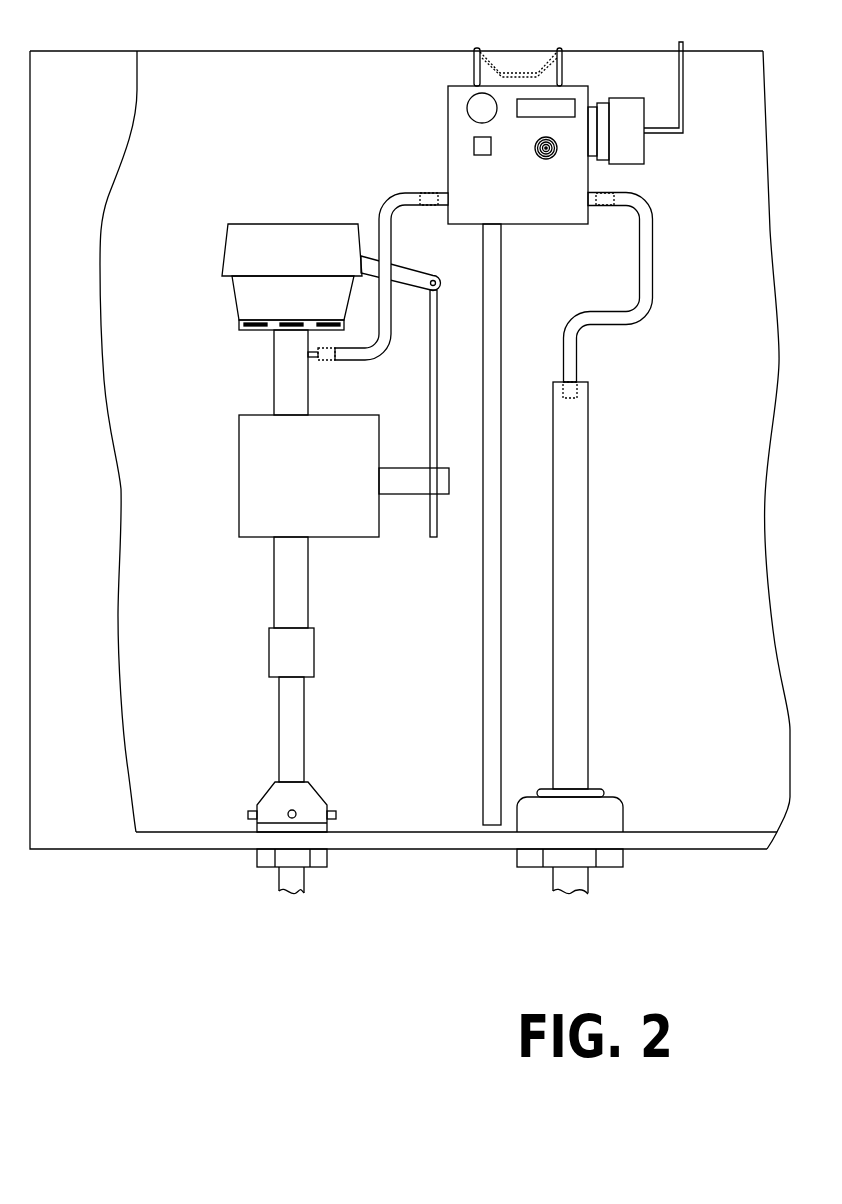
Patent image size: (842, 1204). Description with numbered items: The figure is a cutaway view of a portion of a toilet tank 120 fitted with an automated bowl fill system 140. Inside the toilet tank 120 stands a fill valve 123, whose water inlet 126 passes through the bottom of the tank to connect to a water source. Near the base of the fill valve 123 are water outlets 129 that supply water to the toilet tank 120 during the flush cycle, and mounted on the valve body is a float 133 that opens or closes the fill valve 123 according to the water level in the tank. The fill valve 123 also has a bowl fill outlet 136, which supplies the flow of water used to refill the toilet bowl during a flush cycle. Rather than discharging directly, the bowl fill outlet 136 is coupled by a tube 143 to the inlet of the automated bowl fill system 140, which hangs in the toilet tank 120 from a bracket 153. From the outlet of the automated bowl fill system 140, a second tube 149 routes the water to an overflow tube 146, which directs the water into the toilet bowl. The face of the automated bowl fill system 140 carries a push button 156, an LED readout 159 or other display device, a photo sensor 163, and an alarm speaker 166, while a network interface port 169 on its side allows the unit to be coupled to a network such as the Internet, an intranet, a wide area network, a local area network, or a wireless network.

The toilet tank 120 is at (156, 981).
The fill valve 123 is at (275, 373).
The water inlet 126 is at (298, 897).
The water outlets 129 is at (338, 815).
The float 133 is at (255, 456).
The bowl fill outlet 136 is at (315, 360).
The automated bowl fill system 140 is at (526, 215).
The tube 143 is at (393, 198).
The overflow tube 146 is at (568, 572).
The tube 149 is at (648, 259).
The bracket 153 is at (473, 64).
The push button 156 is at (480, 102).
The LED readout 159 is at (563, 99).
The photo sensor 163 is at (482, 153).
The alarm speaker 166 is at (553, 157).
The network interface port 169 is at (600, 102).